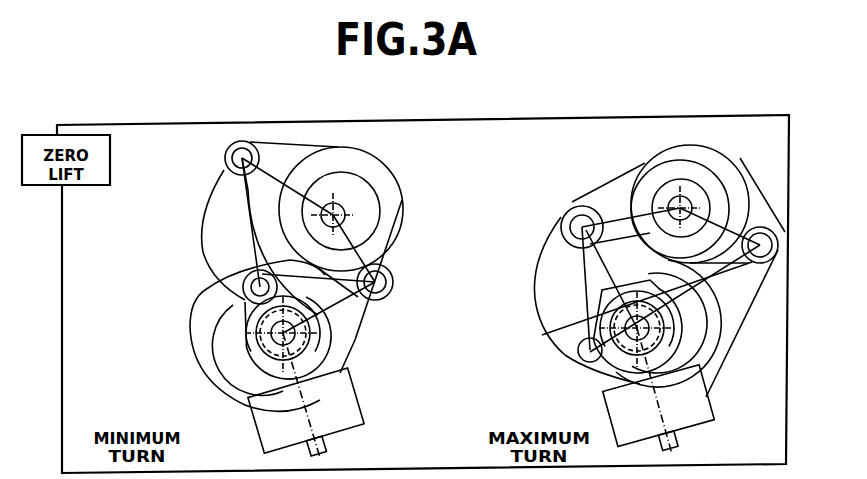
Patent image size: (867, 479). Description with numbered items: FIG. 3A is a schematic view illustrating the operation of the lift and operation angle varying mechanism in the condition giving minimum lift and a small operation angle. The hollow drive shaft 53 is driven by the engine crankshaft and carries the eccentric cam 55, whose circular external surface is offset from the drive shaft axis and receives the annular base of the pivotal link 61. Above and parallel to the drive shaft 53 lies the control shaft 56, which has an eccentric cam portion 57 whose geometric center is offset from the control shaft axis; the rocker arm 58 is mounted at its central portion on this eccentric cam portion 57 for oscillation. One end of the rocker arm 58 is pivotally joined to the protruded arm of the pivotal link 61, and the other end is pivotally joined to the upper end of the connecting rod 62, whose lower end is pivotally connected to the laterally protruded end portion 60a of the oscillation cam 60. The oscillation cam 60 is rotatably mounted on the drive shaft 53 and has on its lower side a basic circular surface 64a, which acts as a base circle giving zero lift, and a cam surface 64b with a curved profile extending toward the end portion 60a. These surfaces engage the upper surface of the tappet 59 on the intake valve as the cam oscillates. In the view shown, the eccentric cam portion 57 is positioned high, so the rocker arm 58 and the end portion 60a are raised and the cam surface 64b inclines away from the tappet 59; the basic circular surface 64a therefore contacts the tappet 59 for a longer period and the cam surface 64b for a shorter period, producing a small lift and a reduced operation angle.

The drive shaft 53 is at (363, 343).
The eccentric cam 55 is at (217, 337).
The control shaft 56 is at (342, 192).
The eccentric cam portion 57 is at (370, 197).
The rocker arm 58 is at (393, 215).
The tappet 59 is at (348, 400).
The oscillation cam 60 is at (242, 315).
The laterally protruded end portion 60a is at (545, 352).
The pivotal link 61 is at (370, 310).
The connecting rod 62 is at (215, 195).
The basic circular surface 64a is at (227, 383).
The cam surface 64b is at (563, 365).